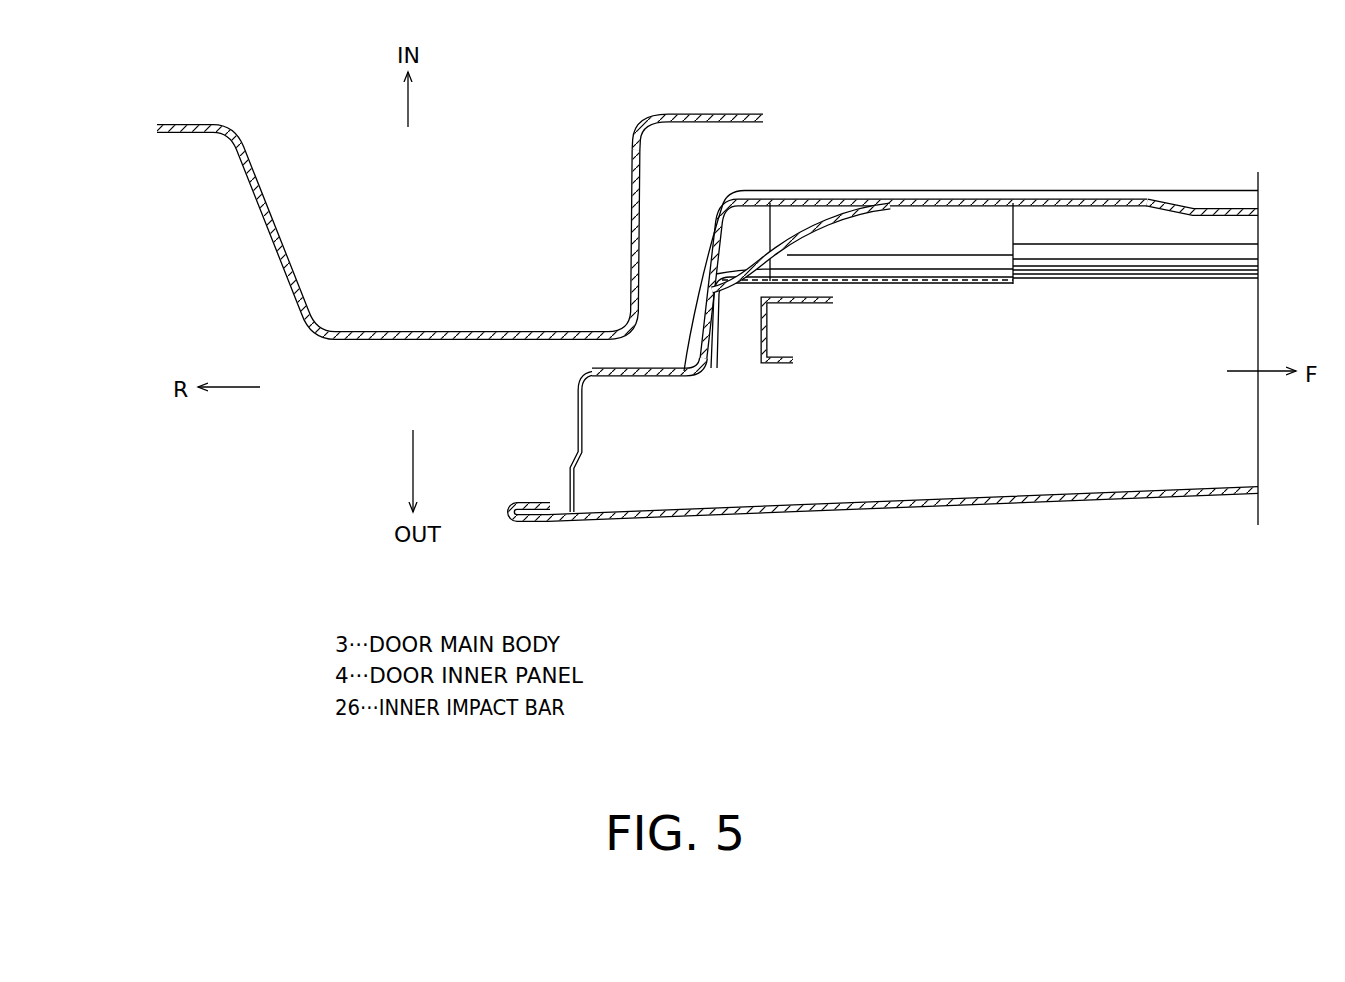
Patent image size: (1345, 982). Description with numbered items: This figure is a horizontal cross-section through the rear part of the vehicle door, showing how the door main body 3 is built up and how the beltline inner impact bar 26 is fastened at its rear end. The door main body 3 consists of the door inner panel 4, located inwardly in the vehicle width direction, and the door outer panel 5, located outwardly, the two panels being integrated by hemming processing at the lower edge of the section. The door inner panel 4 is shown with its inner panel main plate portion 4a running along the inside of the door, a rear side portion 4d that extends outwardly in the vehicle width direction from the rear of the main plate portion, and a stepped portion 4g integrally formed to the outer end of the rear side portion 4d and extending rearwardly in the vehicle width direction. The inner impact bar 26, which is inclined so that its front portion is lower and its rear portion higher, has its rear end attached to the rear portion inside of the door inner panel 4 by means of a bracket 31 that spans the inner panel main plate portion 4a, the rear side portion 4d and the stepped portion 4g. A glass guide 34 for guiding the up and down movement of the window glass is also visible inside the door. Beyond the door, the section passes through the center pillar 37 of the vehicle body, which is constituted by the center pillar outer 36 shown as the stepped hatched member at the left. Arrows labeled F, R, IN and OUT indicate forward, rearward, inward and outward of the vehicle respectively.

The door main body 3 is at (877, 521).
The door inner panel 4 is at (915, 324).
The inner panel main plate portion 4a is at (1043, 197).
The rear side portion 4d is at (699, 313).
The stepped portion 4g is at (627, 367).
The door outer panel 5 is at (1000, 507).
The inner impact bar 26 is at (1133, 268).
The bracket 31 is at (957, 283).
The glass guide 34 is at (768, 368).
The center pillar outer 36 is at (457, 342).
The center pillar 37 is at (724, 102).